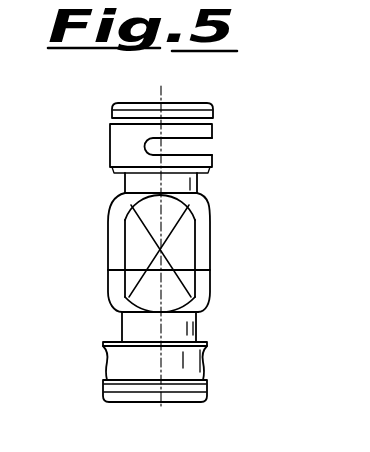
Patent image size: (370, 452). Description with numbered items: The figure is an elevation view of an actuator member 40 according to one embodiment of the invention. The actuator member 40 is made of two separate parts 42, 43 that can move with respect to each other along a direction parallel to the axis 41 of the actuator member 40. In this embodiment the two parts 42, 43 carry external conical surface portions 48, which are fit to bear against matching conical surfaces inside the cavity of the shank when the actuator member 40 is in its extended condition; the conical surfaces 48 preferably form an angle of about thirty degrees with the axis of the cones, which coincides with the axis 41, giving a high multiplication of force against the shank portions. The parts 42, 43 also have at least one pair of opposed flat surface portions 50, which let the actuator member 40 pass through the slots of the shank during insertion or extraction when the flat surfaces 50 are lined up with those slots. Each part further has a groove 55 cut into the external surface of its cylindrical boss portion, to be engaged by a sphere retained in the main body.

The actuator member 40 is at (222, 278).
The axis 41 is at (152, 93).
The separate part 42 is at (216, 360).
The separate part 43 is at (226, 127).
The external conical surface portions 48 is at (111, 199).
The opposed flat surface portions 50 is at (143, 293).
The groove 55 is at (213, 148).